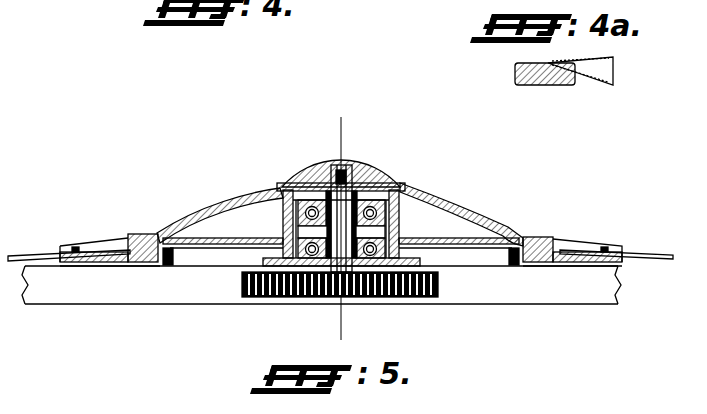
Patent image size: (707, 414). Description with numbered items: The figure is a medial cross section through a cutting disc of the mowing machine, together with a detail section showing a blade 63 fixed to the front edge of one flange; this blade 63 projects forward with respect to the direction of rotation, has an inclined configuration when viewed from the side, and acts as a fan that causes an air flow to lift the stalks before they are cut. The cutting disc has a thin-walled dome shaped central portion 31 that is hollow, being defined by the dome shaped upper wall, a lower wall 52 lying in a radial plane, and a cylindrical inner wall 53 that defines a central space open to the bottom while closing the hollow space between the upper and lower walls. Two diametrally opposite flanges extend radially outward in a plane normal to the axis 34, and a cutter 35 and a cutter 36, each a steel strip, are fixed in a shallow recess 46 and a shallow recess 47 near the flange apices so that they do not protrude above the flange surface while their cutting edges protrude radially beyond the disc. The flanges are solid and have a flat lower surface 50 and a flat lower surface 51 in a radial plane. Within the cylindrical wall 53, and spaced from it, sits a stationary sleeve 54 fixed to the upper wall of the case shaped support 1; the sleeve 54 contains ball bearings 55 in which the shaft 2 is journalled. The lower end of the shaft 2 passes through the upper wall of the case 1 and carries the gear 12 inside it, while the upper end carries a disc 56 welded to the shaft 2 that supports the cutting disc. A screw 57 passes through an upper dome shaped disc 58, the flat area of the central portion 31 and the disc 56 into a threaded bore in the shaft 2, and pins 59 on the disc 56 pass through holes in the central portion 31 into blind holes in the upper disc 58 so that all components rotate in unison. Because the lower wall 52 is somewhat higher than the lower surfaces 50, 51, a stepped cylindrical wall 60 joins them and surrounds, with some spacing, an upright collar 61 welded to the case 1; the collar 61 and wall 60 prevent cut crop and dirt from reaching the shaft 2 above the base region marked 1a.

In FIG. 5, the case shaped support 1 is at (105, 296).
In FIG. 5, the support plate 1a is at (363, 264).
In FIG. 5, the shaft 2 is at (390, 242).
In FIG. 5, the gear 12 is at (298, 292).
In FIG. 5, the dome shaped central portion 31 is at (170, 230).
In FIG. 5, the axis 34 is at (343, 140).
In FIG. 5, the cutter 35 is at (36, 256).
In FIG. 5, the cutter 36 is at (646, 254).
In FIG. 5, the shallow recess 46 is at (116, 246).
In FIG. 5, the shallow recess 47 is at (566, 250).
In FIG. 5, the flat lower surface 50 is at (128, 266).
In FIG. 5, the flat lower surface 51 is at (578, 265).
In FIG. 5, the lower wall 52 is at (230, 246).
In FIG. 5, the cylindrical inner wall 53 is at (283, 200).
In FIG. 5, the stationary sleeve 54 is at (284, 234).
In FIG. 5, the ball bearings 55 is at (397, 217).
In FIG. 5, the disc 56 is at (398, 194).
In FIG. 5, the screw 57 is at (346, 176).
In FIG. 5, the upper dome shaped disc 58 is at (391, 186).
In FIG. 5, the pins 59 is at (320, 182).
In FIG. 5, the cylindrical wall 60 is at (527, 264).
In FIG. 5, the upright collar 61 is at (172, 265).
In FIG. 4a, the blade 63 is at (594, 76).